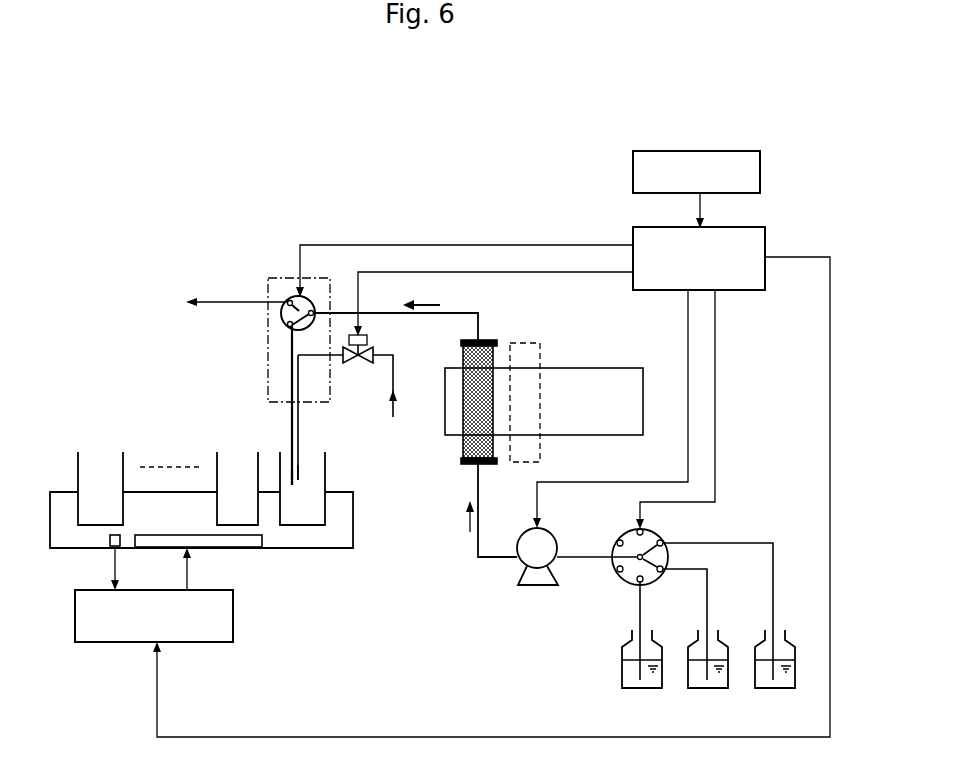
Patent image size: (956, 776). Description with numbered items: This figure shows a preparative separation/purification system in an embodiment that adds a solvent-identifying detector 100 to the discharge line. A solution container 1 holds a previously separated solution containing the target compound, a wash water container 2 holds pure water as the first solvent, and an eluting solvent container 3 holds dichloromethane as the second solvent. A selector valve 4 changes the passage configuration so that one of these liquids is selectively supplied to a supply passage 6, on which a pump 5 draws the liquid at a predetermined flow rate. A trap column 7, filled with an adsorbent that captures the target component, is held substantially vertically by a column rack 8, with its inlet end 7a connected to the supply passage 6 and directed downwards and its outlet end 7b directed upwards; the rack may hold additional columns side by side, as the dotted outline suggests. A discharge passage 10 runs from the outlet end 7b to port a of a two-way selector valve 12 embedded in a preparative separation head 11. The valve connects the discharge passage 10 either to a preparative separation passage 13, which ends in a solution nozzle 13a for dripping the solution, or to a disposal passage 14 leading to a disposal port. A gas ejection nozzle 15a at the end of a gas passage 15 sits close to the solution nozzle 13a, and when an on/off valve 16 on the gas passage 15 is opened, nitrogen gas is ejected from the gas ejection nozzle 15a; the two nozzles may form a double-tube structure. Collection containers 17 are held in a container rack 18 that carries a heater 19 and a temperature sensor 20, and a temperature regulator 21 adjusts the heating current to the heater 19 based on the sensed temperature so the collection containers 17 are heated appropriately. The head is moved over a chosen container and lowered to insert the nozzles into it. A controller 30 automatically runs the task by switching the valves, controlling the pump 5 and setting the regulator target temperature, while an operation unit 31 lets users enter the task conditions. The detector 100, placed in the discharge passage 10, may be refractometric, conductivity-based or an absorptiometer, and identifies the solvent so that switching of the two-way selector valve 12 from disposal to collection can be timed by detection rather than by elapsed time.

The solution container 1 is at (636, 690).
The wash water container 2 is at (702, 690).
The eluting solvent container 3 is at (769, 690).
The selector valve 4 is at (620, 580).
The pump 5 is at (533, 586).
The supply passage 6 is at (483, 560).
The trap column 7 is at (462, 450).
The inlet end 7a is at (461, 466).
The outlet end 7b is at (497, 343).
The column rack 8 is at (608, 368).
The discharge passage 10 is at (478, 313).
The preparative separation head 11 is at (283, 278).
The two-way selector valve 12 is at (310, 298).
The preparative separation passage 13 is at (268, 385).
The solution nozzle 13a is at (287, 478).
The disposal passage 14 is at (257, 301).
The gas passage 15 is at (299, 425).
The gas ejection nozzle 15a is at (300, 480).
The on/off valve 16 is at (376, 350).
The collection container 17 is at (296, 526).
The container rack 18 is at (336, 548).
The heater 19 is at (242, 548).
The temperature sensor 20 is at (109, 541).
The temperature regulator 21 is at (235, 620).
The controller 30 is at (767, 234).
The operation unit 31 is at (762, 170).
The detector 100 is at (408, 290).